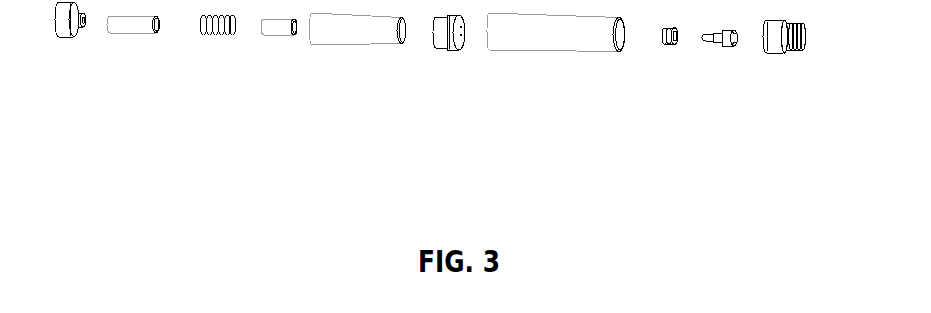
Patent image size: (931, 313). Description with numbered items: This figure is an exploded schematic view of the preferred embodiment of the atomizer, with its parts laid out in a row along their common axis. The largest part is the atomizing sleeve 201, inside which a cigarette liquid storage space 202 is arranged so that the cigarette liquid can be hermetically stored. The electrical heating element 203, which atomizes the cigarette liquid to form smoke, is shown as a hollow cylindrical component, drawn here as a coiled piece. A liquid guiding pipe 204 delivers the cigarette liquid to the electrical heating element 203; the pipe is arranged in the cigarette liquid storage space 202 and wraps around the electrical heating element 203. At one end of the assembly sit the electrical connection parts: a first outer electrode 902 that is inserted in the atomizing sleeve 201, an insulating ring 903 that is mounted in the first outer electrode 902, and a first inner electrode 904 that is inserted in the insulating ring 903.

The atomizing sleeve 201 is at (510, 103).
The cigarette liquid storage space 202 is at (362, 75).
The electrical heating element 203 is at (197, 103).
The liquid guiding pipe 204 is at (121, 62).
The first outer electrode 902 is at (800, 97).
The insulating ring 903 is at (637, 88).
The first inner electrode 904 is at (693, 88).